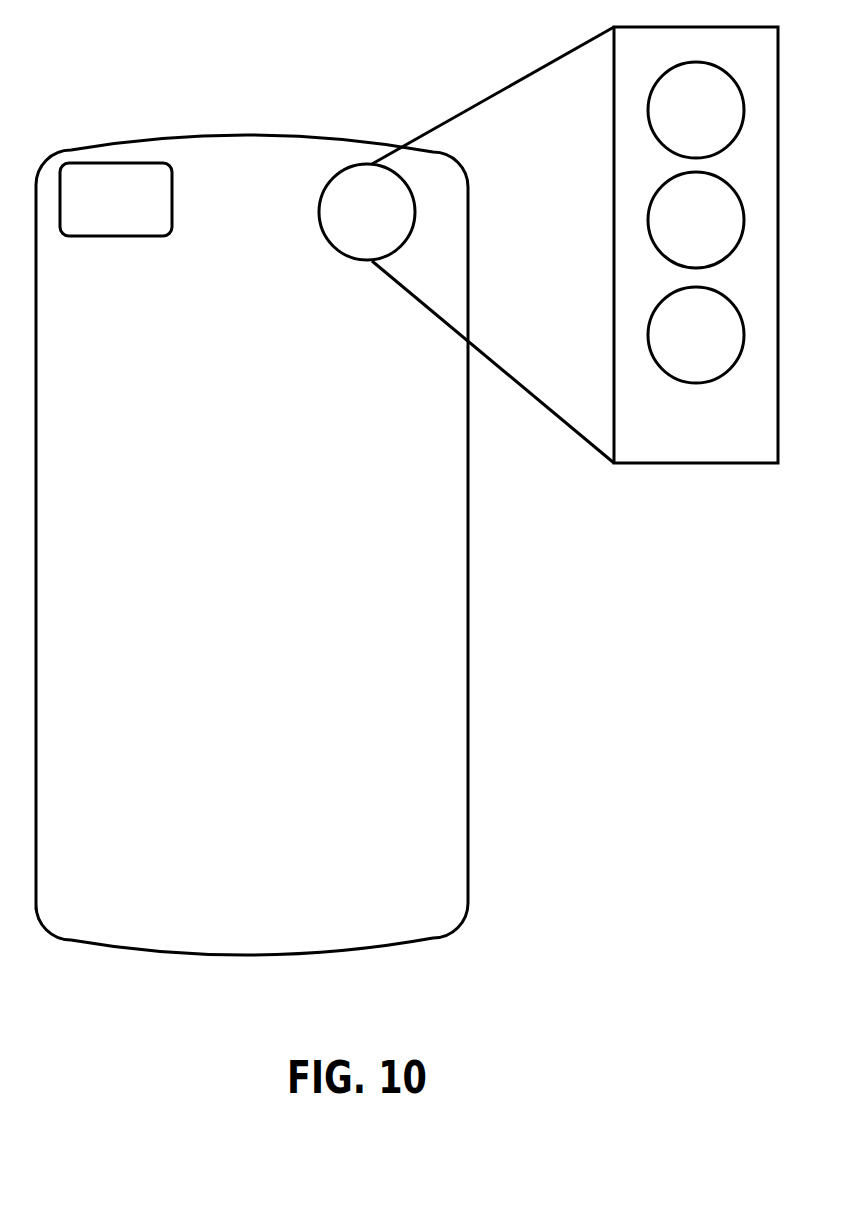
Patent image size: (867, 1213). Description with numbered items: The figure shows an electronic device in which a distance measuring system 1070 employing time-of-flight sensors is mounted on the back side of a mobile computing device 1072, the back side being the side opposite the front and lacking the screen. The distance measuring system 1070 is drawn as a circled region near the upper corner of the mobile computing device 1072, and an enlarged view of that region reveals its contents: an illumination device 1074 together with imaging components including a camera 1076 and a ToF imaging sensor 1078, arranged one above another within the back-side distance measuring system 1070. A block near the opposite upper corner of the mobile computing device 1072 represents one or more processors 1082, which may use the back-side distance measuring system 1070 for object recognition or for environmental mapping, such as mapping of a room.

The distance measuring system 1070 is at (399, 226).
The mobile computing device 1072 is at (133, 911).
The illumination device 1074 is at (664, 124).
The camera 1076 is at (664, 234).
The ToF imaging sensor 1078 is at (664, 349).
The processors 1082 is at (116, 199).